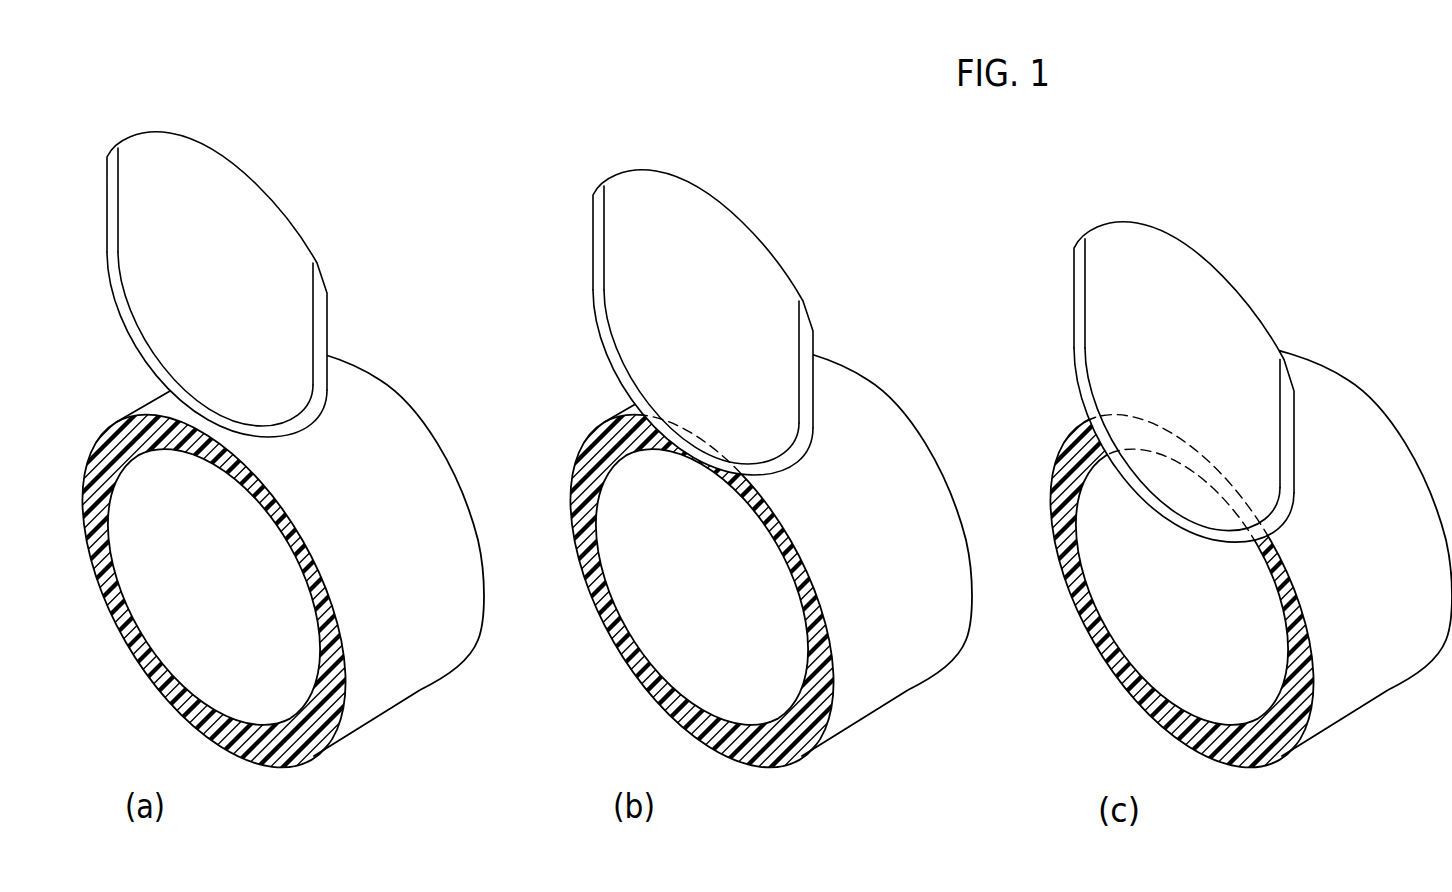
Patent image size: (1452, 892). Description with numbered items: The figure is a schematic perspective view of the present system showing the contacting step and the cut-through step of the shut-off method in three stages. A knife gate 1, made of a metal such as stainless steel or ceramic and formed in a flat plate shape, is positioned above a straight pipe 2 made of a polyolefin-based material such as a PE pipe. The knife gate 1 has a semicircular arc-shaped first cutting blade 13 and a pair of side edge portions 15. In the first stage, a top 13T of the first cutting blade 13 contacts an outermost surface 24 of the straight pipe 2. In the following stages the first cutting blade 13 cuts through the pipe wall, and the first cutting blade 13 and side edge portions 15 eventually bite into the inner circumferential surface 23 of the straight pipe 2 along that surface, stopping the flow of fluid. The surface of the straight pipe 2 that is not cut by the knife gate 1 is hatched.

The knife gate 1 is at (700, 324).
The straight pipe 2 is at (726, 577).
The first cutting blade 13 is at (282, 442).
The top of the first cutting blade 13T is at (197, 463).
The side edge portion 15 is at (320, 312).
The inner circumferential surface 23 is at (740, 727).
The outermost surface 24 is at (373, 410).